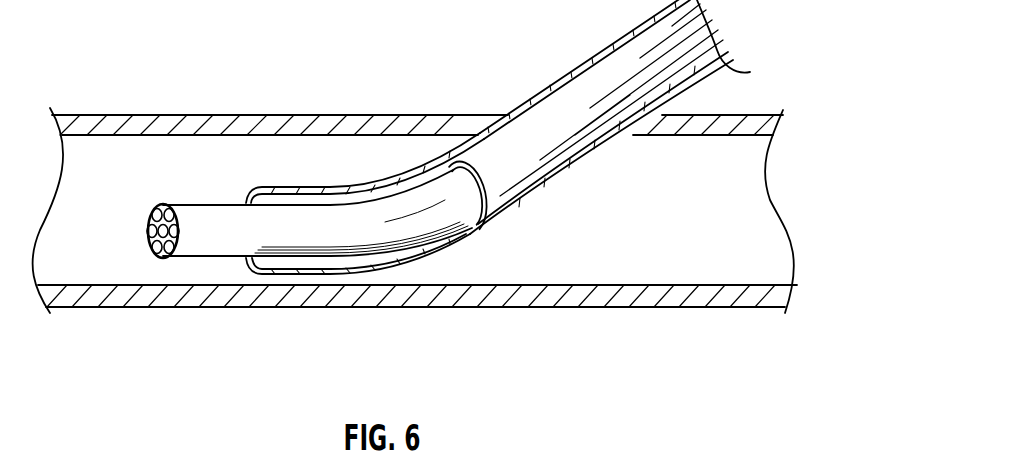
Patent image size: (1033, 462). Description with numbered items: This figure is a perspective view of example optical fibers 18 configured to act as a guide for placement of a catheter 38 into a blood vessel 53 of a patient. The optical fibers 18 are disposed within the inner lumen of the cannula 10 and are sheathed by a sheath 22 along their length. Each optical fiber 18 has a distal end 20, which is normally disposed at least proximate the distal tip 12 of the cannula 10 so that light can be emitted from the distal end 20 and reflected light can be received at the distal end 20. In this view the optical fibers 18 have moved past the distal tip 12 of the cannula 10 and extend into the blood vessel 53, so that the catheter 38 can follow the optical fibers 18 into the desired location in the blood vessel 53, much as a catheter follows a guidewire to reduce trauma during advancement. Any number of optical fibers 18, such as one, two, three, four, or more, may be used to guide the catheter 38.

The cannula 10 is at (608, 80).
The distal tip 12 is at (472, 228).
The optical fibers 18 is at (150, 246).
The distal end 20 is at (150, 214).
The sheath 22 is at (222, 225).
The catheter 38 is at (307, 270).
The blood vessel 53 is at (79, 270).